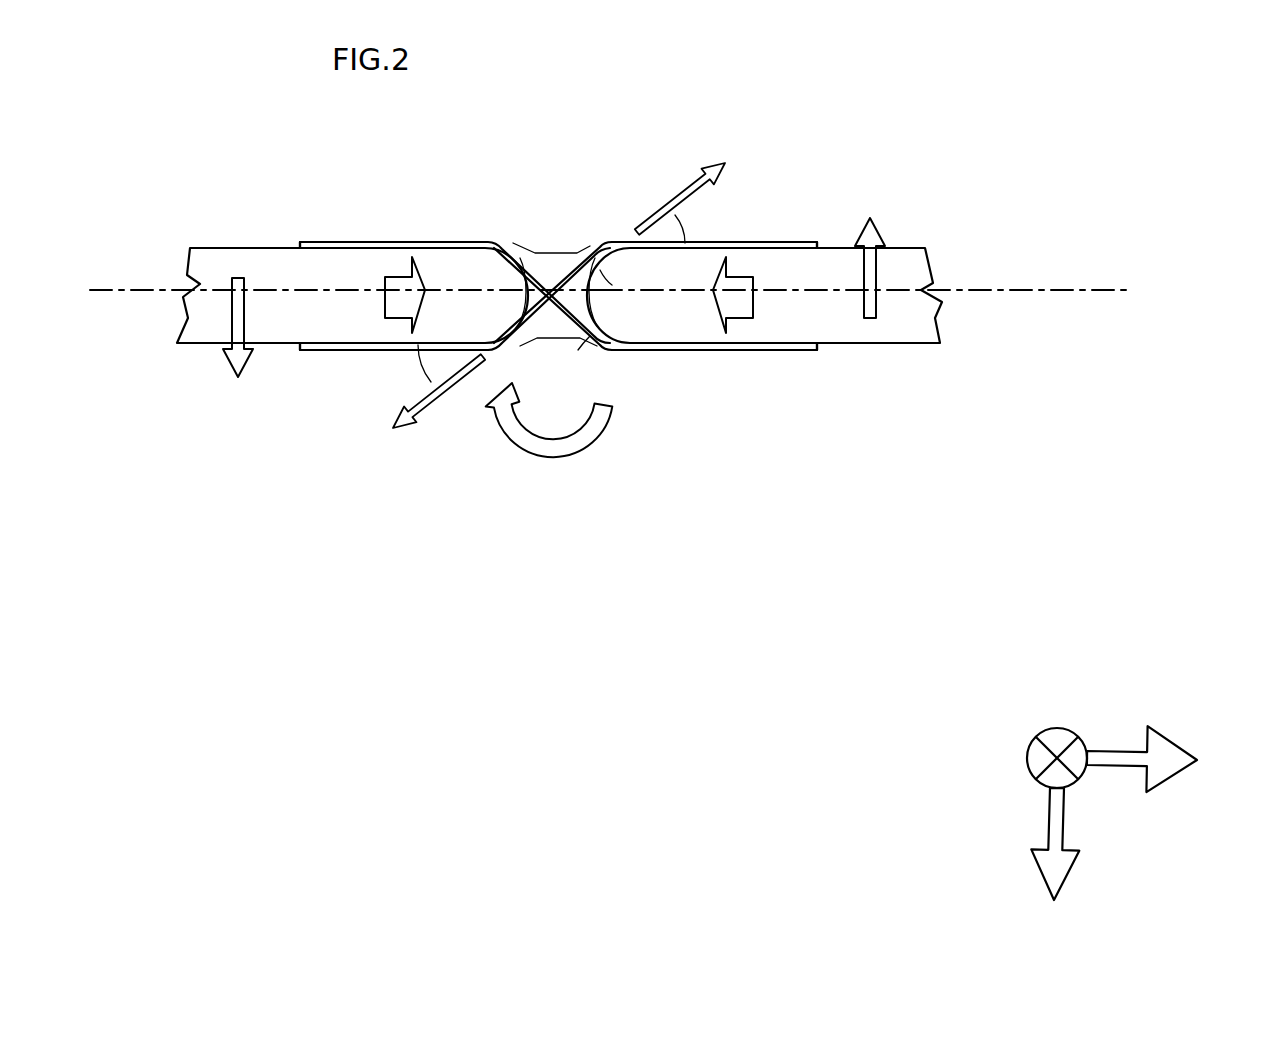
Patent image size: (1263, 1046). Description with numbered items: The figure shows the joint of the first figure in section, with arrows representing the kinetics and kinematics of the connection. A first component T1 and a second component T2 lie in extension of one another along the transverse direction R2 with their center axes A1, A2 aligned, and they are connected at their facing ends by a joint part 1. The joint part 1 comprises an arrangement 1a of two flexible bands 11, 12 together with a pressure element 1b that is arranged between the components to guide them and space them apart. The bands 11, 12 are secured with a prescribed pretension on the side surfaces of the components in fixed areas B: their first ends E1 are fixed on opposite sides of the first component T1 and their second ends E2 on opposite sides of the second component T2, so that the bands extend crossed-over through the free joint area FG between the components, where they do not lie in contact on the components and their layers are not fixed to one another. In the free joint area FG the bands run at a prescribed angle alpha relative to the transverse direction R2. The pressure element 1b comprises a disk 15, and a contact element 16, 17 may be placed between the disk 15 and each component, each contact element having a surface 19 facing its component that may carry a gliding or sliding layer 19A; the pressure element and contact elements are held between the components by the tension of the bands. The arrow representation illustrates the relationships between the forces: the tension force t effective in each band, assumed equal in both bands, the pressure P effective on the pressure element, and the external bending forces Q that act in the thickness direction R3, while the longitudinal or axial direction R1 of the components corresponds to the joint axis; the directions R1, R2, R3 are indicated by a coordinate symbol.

The joint part 1 is at (546, 197).
The arrangement of at least two flexible bands 1a is at (514, 232).
The pressure element 1b is at (599, 232).
The band 11 is at (440, 243).
The band 12 is at (318, 352).
The disk 15 is at (553, 340).
The contact element 16 is at (520, 347).
The contact element 17 is at (590, 347).
The surface of the contact element 19 is at (520, 302).
The gliding or sliding layer 19A is at (600, 282).
The fixed area B is at (360, 233).
The free joint area FG is at (567, 210).
The first ends of the bands E1 is at (300, 245).
The second ends of the bands E2 is at (775, 243).
The first component T1 is at (215, 290).
The second component T2 is at (897, 300).
The center axis of the first component A1 is at (105, 290).
The center axis of the second component A2 is at (1028, 290).
The external bending force Q is at (554, 297).
The pressure P is at (569, 295).
The tension force t is at (567, 306).
The angle of bands relative to transverse direction alpha is at (543, 299).
The longitudinal direction R1 is at (1035, 762).
The transverse direction R2 is at (1153, 778).
The thickness direction R3 is at (1074, 846).